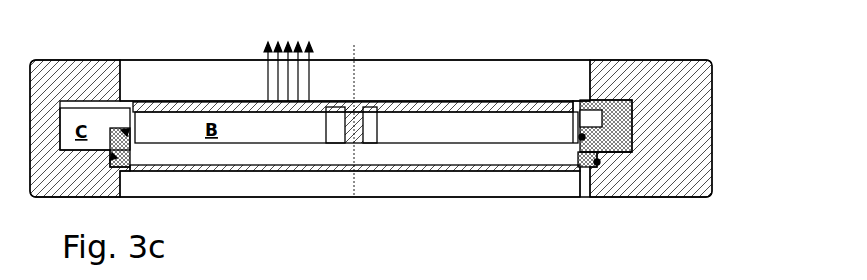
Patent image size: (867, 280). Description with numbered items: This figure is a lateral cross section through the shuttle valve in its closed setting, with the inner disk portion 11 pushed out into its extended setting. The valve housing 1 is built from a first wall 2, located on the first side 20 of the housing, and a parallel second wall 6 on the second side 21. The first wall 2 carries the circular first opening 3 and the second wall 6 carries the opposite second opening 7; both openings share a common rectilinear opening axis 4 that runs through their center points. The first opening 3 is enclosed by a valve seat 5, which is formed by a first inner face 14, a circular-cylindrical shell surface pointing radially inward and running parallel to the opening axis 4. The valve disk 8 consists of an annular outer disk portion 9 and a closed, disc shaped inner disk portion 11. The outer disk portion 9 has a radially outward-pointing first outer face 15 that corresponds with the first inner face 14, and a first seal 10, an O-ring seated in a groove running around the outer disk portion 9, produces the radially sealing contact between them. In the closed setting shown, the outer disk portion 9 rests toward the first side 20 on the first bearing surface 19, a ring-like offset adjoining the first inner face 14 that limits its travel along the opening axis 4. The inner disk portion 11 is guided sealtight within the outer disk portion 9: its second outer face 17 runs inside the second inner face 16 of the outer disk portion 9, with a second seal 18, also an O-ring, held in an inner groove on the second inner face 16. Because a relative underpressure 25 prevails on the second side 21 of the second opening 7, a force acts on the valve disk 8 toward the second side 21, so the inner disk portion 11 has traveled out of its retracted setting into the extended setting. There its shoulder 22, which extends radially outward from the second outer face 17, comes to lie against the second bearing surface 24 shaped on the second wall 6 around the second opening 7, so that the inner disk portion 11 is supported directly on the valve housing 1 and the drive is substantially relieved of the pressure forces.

The valve housing 1 is at (68, 80).
The first wall 2 is at (594, 185).
The first opening 3 is at (430, 187).
The opening axis 4 is at (355, 187).
The valve seat 5 is at (576, 185).
The second wall 6 is at (595, 78).
The second opening 7 is at (442, 87).
The valve disk 8 is at (235, 85).
The outer disk portion 9 is at (600, 152).
The first seal 10 is at (597, 162).
The inner disk portion 11 is at (532, 105).
The first inner face 14 is at (597, 162).
The first outer face 15 is at (597, 162).
The second inner face 16 is at (582, 137).
The second outer face 17 is at (580, 120).
The second seal 18 is at (605, 133).
The first bearing surface 19 is at (597, 162).
The first side 20 is at (350, 184).
The second side 21 is at (355, 80).
The shoulder 22 is at (593, 102).
The second bearing surface 24 is at (590, 100).
The relative underpressure 25 is at (313, 45).